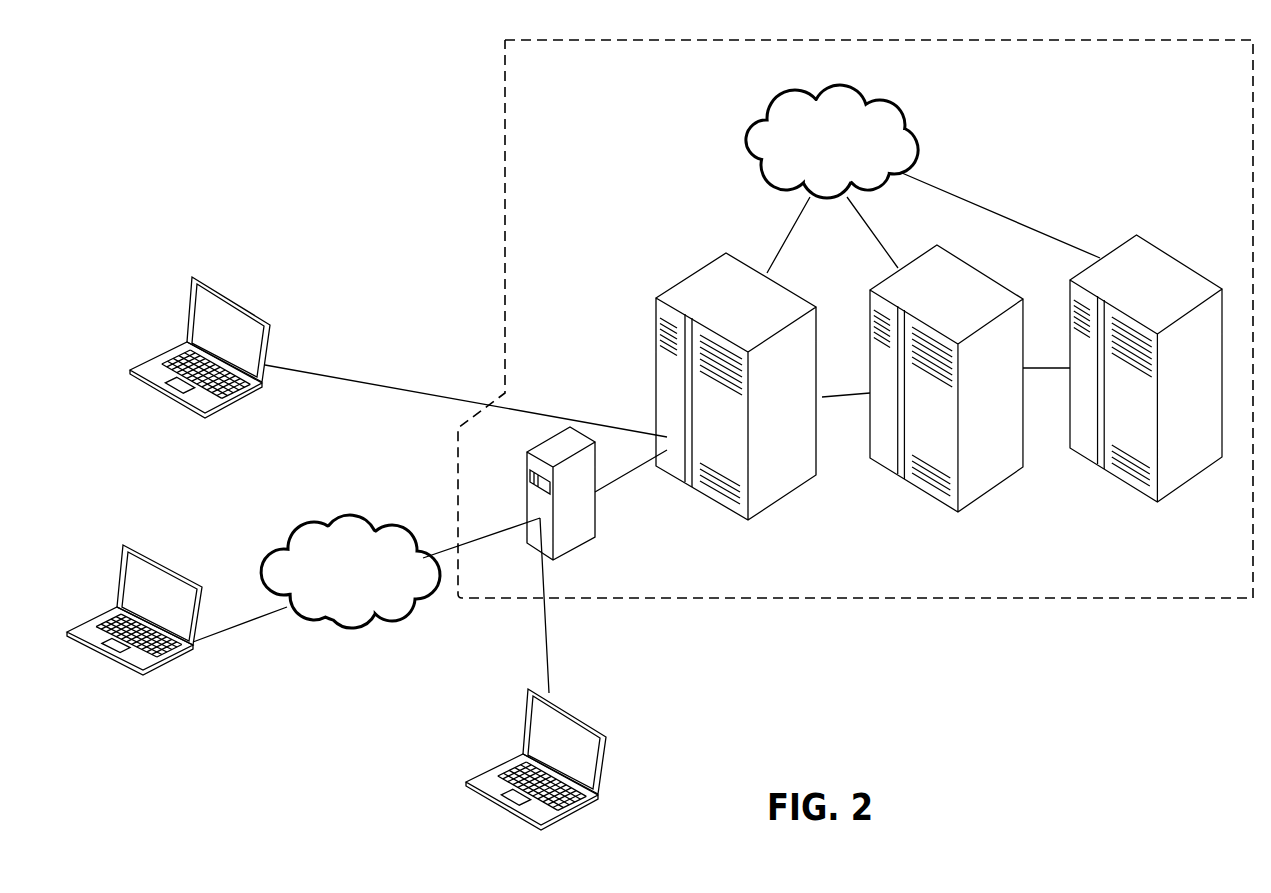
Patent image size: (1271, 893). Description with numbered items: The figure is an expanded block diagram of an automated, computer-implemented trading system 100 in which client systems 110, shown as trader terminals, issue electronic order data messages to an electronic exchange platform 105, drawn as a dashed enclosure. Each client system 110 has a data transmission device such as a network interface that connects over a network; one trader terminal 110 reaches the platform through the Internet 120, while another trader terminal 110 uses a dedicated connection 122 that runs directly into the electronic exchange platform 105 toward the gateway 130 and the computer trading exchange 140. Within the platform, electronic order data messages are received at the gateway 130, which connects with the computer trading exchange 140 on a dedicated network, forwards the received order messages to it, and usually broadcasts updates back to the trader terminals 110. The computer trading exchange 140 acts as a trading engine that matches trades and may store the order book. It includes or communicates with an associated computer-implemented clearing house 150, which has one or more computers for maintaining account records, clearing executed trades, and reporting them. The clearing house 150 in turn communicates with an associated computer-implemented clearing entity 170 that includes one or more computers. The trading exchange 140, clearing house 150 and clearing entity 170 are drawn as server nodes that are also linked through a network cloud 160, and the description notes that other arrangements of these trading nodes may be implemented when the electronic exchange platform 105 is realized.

The trading system 100 is at (436, 248).
The electronic exchange platform 105 is at (505, 128).
The client system 110 is at (150, 360).
The Internet 120 is at (333, 522).
The dedicated connection 122 is at (460, 392).
The gateway 130 is at (532, 507).
The computer trading exchange 140 is at (658, 337).
The clearing house 150 is at (993, 463).
The network(s) 160 is at (888, 97).
The clearing entity 170 is at (1178, 450).